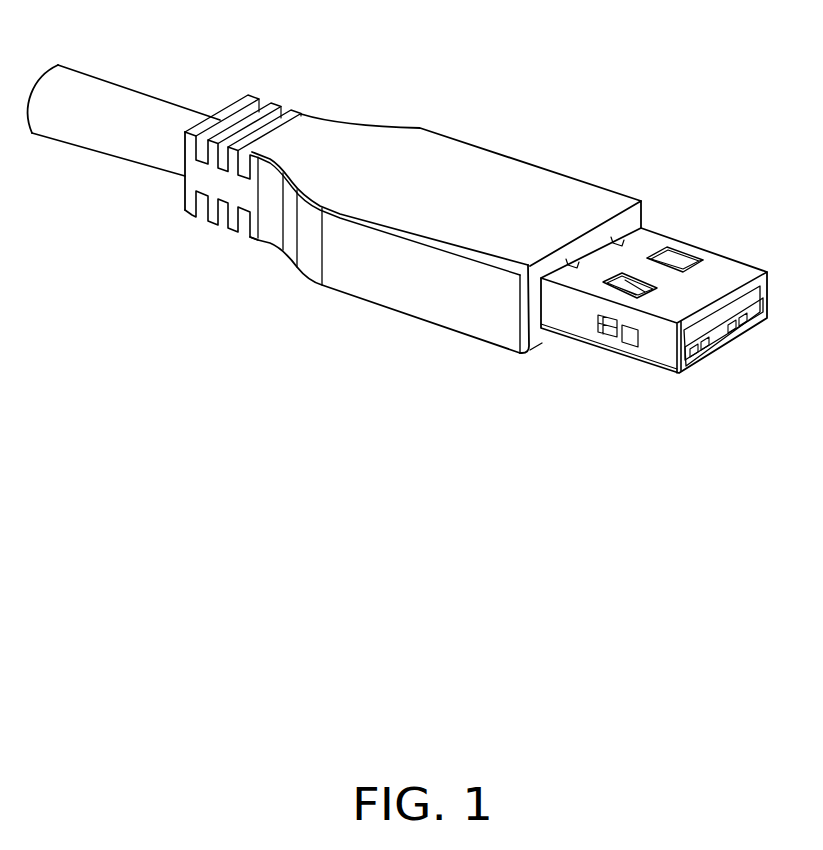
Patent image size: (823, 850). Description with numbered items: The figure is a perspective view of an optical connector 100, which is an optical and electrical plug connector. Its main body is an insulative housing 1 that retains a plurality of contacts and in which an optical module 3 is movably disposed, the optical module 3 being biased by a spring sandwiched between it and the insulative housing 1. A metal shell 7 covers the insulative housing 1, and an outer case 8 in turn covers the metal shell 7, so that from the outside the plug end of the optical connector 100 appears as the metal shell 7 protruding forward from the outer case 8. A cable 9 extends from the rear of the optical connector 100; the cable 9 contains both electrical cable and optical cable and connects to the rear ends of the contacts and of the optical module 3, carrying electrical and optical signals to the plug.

The optical connector 100 is at (408, 227).
The insulative housing 1 is at (664, 294).
The optical module 3 is at (747, 334).
The metal shell 7 is at (640, 240).
The outer case 8 is at (512, 194).
The cable 9 is at (132, 107).